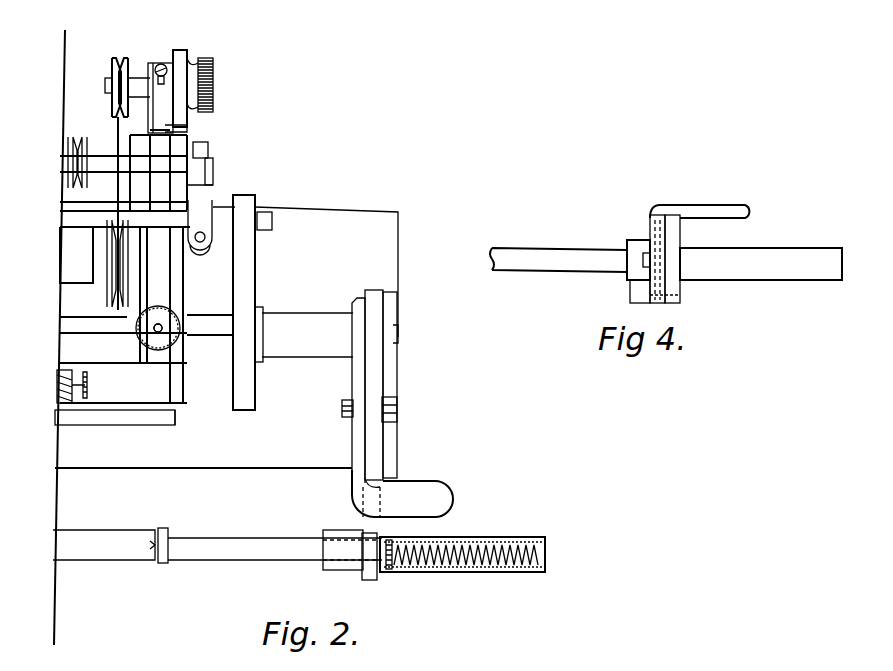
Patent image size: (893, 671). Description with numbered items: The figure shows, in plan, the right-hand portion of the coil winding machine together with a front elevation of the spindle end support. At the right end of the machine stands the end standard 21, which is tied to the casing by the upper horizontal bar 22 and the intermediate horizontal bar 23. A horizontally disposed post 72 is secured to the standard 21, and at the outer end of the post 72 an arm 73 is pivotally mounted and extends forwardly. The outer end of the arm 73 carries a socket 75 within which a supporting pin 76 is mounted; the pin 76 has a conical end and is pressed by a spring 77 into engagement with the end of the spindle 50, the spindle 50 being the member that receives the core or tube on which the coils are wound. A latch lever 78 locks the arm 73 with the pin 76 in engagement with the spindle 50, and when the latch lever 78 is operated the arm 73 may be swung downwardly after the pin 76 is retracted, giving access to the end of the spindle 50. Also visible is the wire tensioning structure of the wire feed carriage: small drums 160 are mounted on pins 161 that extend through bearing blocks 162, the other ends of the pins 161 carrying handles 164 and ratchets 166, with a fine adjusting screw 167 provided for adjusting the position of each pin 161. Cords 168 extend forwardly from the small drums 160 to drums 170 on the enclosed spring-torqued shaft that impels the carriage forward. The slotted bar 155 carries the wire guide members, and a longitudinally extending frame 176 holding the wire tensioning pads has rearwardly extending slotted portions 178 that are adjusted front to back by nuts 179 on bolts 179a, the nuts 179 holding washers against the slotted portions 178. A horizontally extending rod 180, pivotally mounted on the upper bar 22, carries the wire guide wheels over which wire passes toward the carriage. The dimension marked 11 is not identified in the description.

In FIG. 2, the dimension / section reference 11 is at (76, 22).
In FIG. 2, the small drum 160 is at (127, 58).
In FIG. 2, the pin 161 is at (145, 80).
In FIG. 2, the fine adjusting screw 167 is at (167, 66).
In FIG. 2, the ratchet 166 is at (187, 52).
In FIG. 2, the handle 164 is at (213, 82).
In FIG. 2, the bearing block 162 is at (190, 128).
In FIG. 2, the cord 168 is at (118, 133).
In FIG. 2, the horizontally extending rod 180 is at (88, 176).
In FIG. 2, the upper horizontal bar 22 is at (220, 198).
In FIG. 2, the end standard 21 is at (247, 250).
In FIG. 2, the post 72 is at (303, 316).
In FIG. 2, the arm 73 is at (375, 378).
In FIG. 4, the arm 73 is at (677, 287).
In FIG. 2, the drum 170 is at (107, 298).
In FIG. 2, the slotted portion 178 is at (190, 283).
In FIG. 2, the bolt 179a is at (163, 326).
In FIG. 2, the nut 179 is at (170, 340).
In FIG. 2, the intermediate horizontal bar 23 is at (76, 333).
In FIG. 2, the frame 176 is at (112, 400).
In FIG. 2, the slotted bar 155 is at (175, 426).
In FIG. 2, the latch lever 78 is at (353, 445).
In FIG. 4, the latch lever 78 is at (720, 212).
In FIG. 2, the spring 77 is at (480, 543).
In FIG. 2, the socket 75 is at (470, 570).
In FIG. 4, the socket 75 is at (790, 272).
In FIG. 2, the spindle 50 is at (122, 552).
In FIG. 2, the supporting pin 76 is at (225, 548).
In FIG. 4, the supporting pin 76 is at (537, 266).